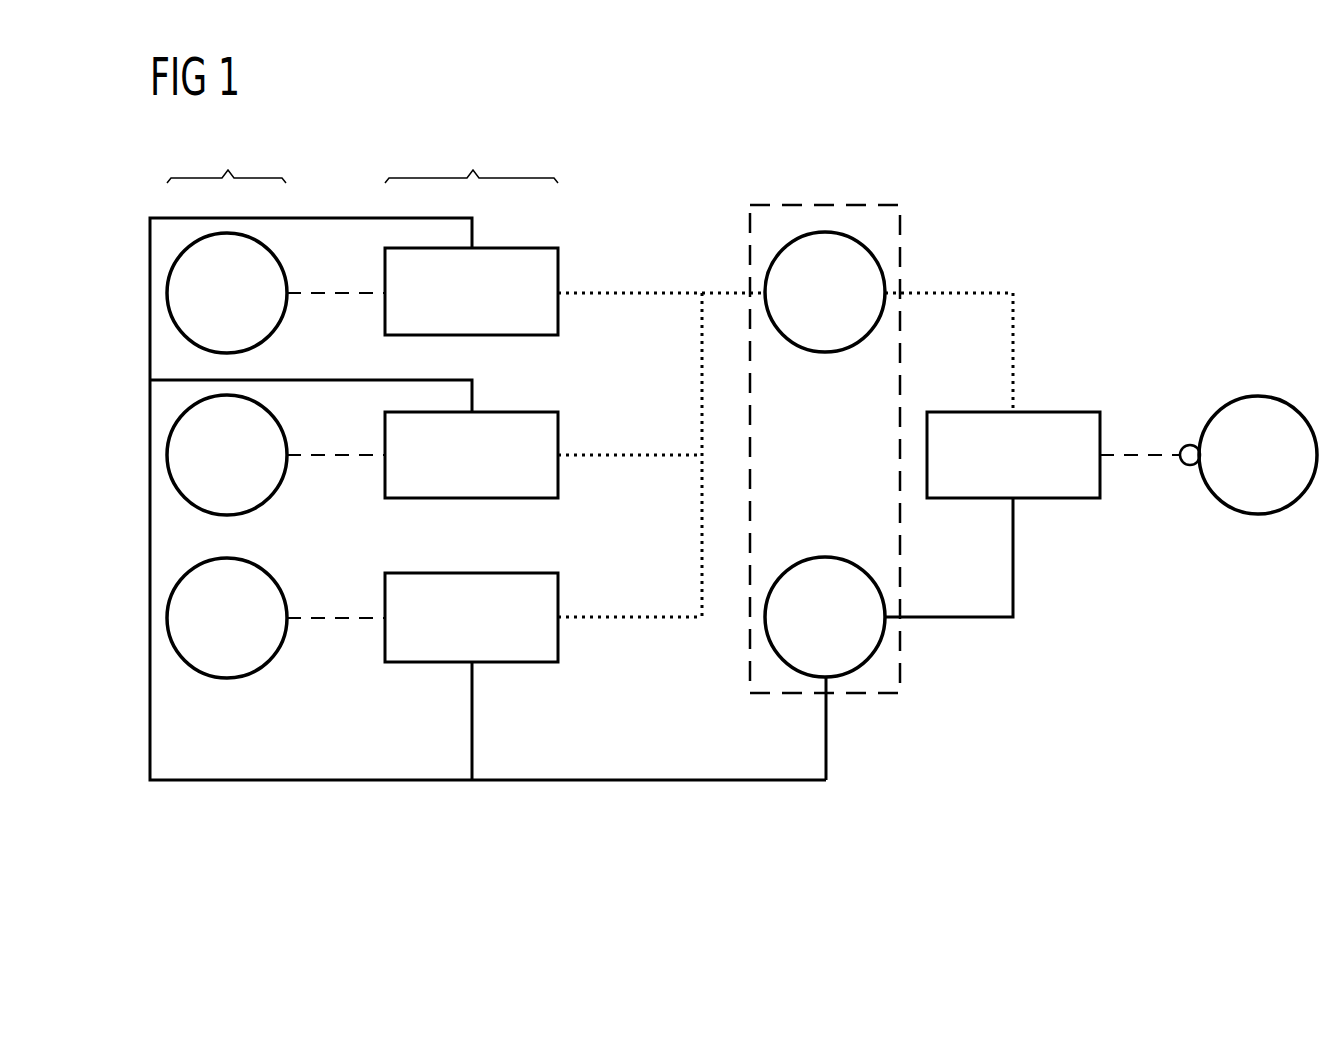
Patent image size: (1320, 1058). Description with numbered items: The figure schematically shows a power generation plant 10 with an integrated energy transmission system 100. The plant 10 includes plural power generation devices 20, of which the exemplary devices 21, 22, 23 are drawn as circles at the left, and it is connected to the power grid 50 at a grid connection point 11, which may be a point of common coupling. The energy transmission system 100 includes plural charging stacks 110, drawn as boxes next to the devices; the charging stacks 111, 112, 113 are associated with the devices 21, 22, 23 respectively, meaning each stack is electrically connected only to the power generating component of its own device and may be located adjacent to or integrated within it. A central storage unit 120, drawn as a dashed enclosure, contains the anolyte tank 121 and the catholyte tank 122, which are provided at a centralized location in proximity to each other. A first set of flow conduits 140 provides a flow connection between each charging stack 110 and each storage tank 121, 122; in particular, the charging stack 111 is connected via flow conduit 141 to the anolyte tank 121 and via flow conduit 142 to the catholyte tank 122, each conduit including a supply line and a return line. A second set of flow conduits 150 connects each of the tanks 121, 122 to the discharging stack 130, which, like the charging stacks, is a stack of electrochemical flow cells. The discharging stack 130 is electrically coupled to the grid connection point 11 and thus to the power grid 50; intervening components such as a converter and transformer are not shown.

The power generation plant 10 is at (648, 832).
The energy transmission system 100 is at (641, 142).
The power generation devices 20 is at (226, 159).
The power generation device 21 is at (280, 648).
The power generation device 22 is at (284, 478).
The power generation device 23 is at (284, 313).
The charging stacks 110 is at (471, 159).
The charging stack 111 is at (558, 638).
The charging stack 112 is at (558, 477).
The charging stack 113 is at (558, 313).
The central storage unit 120 is at (820, 205).
The anolyte tank 121 is at (825, 352).
The catholyte tank 122 is at (825, 557).
The discharging stack 130 is at (1043, 498).
The first set of flow conduits 140 is at (686, 617).
The flow conduit 141 is at (655, 290).
The flow conduit 142 is at (826, 742).
The second set of flow conduits 150 is at (1013, 318).
The grid connection point 11 is at (1188, 445).
The power grid 50 is at (1253, 395).